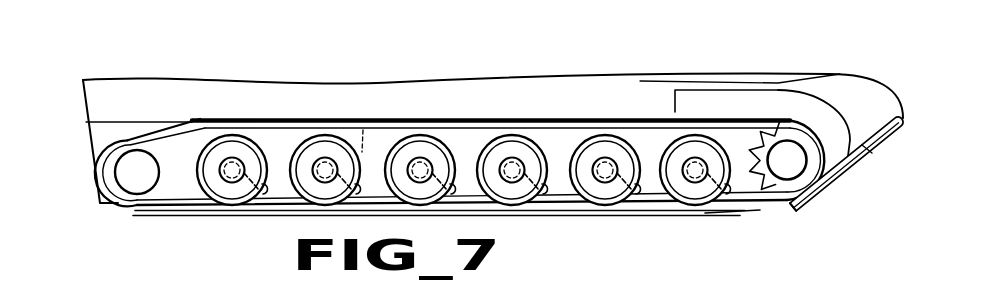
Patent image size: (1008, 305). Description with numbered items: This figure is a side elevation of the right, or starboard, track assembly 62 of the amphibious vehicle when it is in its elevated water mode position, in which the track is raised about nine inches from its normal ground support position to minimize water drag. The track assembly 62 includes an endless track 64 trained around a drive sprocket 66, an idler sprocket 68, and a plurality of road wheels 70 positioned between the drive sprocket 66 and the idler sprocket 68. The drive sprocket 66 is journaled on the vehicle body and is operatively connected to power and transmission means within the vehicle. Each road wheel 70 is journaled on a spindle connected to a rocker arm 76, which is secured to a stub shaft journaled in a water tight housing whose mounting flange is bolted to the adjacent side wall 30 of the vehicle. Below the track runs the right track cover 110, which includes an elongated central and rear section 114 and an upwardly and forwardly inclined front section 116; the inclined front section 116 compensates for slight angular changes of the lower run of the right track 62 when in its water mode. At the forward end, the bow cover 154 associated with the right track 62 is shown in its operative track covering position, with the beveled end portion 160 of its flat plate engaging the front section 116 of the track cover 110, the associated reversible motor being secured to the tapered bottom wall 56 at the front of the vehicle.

The side wall 30 is at (558, 108).
The tapered bottom wall 56 is at (866, 152).
The right track assembly 62 is at (194, 124).
The endless track 64 is at (254, 132).
The drive sprocket 66 is at (795, 128).
The idler sprocket 68 is at (113, 204).
The road wheels 70 is at (483, 136).
The rocker arm 76 is at (363, 129).
The right track cover 110 is at (546, 222).
The elongated central and rear section 114 is at (164, 214).
The upwardly and forwardly inclined front section 116 is at (721, 217).
The bow cover 154 is at (832, 197).
The beveled end portion 160 is at (793, 212).